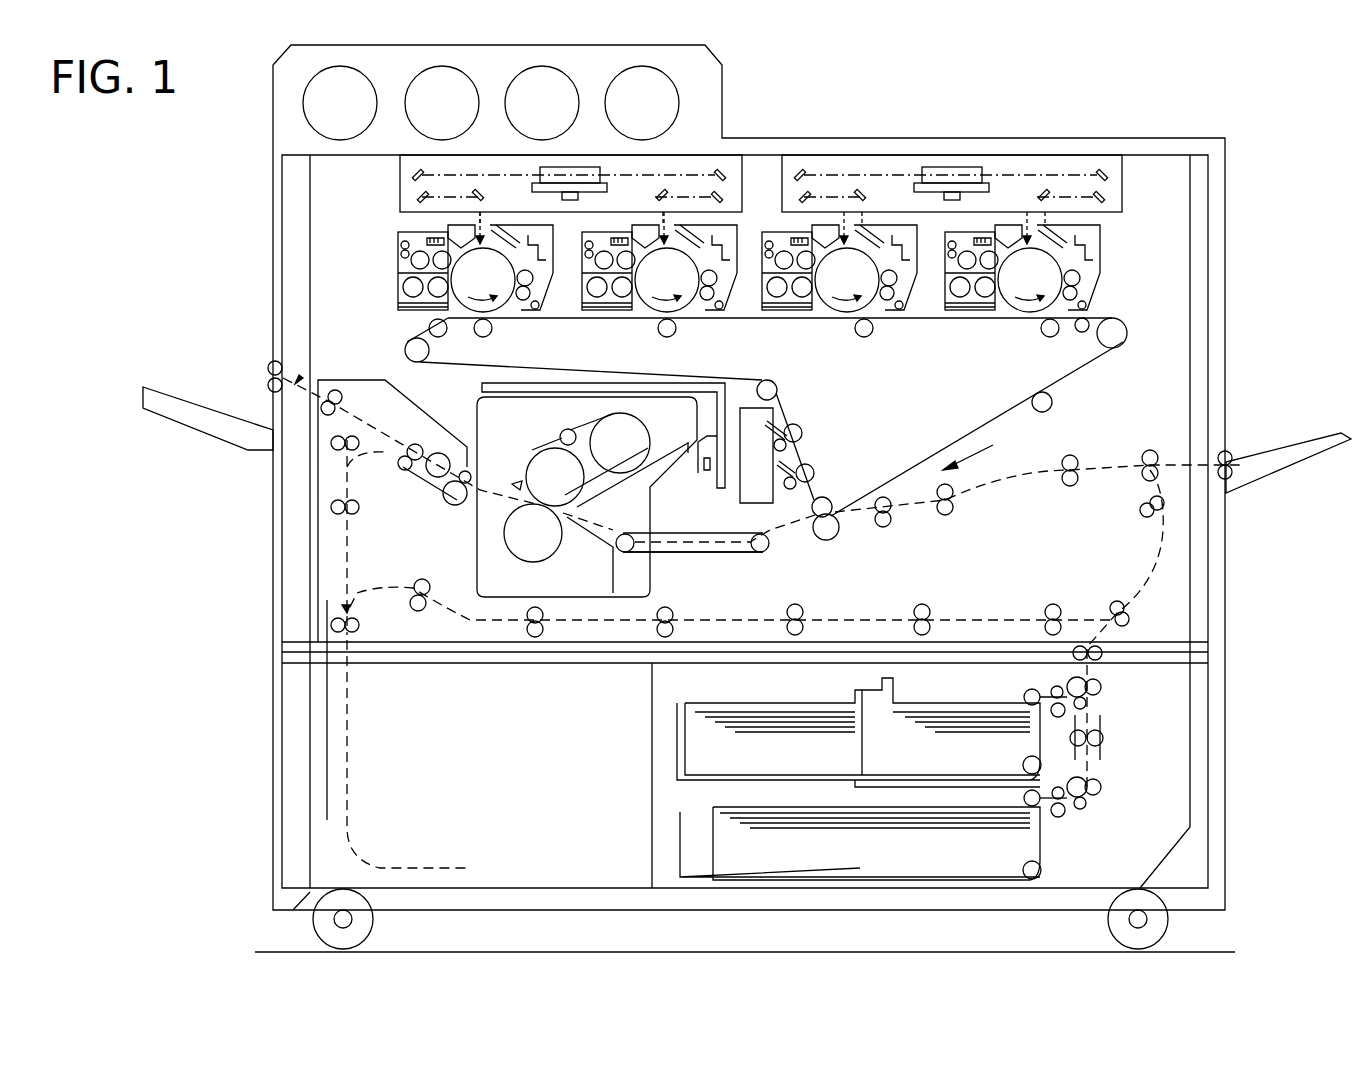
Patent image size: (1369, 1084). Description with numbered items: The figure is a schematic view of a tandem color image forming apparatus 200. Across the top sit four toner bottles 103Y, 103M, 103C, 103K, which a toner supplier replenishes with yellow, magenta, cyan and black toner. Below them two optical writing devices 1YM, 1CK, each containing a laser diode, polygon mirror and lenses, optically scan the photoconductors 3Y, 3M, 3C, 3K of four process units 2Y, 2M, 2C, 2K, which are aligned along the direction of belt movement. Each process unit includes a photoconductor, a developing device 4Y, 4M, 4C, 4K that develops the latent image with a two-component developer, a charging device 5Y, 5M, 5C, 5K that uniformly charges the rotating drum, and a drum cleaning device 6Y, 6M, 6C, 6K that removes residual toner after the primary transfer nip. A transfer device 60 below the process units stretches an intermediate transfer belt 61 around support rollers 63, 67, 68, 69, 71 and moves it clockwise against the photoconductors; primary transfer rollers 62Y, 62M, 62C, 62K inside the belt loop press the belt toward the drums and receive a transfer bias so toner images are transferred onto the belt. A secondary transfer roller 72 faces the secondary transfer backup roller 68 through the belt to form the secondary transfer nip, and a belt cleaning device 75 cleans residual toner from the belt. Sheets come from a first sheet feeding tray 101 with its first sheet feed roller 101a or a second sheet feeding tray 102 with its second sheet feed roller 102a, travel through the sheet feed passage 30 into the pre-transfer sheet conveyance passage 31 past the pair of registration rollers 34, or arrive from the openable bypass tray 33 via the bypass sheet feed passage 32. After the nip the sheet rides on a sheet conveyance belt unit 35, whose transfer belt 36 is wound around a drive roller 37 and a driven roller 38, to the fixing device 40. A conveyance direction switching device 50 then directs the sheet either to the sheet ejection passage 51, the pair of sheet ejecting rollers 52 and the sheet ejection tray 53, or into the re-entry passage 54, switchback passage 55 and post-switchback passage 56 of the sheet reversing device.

The image forming apparatus 200 is at (1102, 108).
The toner bottle 103Y is at (318, 116).
The toner bottle 103M is at (418, 116).
The toner bottle 103C is at (519, 116).
The toner bottle 103K is at (619, 116).
The optical writing device 1YM is at (398, 178).
The optical writing device 1CK is at (1124, 185).
The process unit 2Y is at (457, 283).
The process unit 2M is at (657, 247).
The process unit 2C is at (856, 244).
The process unit 2K is at (1044, 235).
The photoconductor 3Y is at (469, 292).
The photoconductor 3M is at (652, 292).
The photoconductor 3C is at (833, 292).
The photoconductor 3K is at (1016, 292).
The developing device 4Y is at (398, 290).
The developing device 4M is at (582, 292).
The developing device 4C is at (765, 300).
The developing device 4K is at (948, 300).
The charging device 5Y is at (452, 228).
The charging device 5M is at (645, 225).
The charging device 5C is at (826, 225).
The charging device 5K is at (1008, 225).
The drum cleaning device 6Y is at (530, 308).
The drum cleaning device 6M is at (737, 262).
The drum cleaning device 6C is at (910, 305).
The drum cleaning device 6K is at (1101, 255).
The primary transfer roller 62Y is at (492, 336).
The primary transfer roller 62M is at (660, 336).
The primary transfer roller 62C is at (864, 338).
The primary transfer roller 62K is at (1048, 338).
The transfer device 60 is at (1118, 370).
The intermediate transfer belt 61 is at (761, 417).
The support roller 63 is at (406, 355).
The support roller 67 is at (1124, 346).
The secondary transfer backup roller 68 is at (828, 498).
The support roller 69 is at (812, 466).
The support roller 71 is at (778, 393).
The secondary transfer roller 72 is at (828, 541).
The belt cleaning device 75 is at (735, 490).
The fixing device 40 is at (477, 553).
The drive roller 37 is at (618, 552).
The transfer belt 36 is at (672, 556).
The sheet conveyance belt unit 35 is at (715, 560).
The driven roller 38 is at (765, 553).
The pair of registration rollers 34 is at (887, 535).
The pre-transfer sheet conveyance passage 31 is at (993, 493).
The bypass sheet feed passage 32 is at (1170, 463).
The bypass tray 33 is at (1285, 470).
The sheet feed passage 30 is at (1158, 565).
The post-switchback passage 56 is at (572, 624).
The re-entry passage 54 is at (348, 557).
The switchback passage 55 is at (348, 757).
The conveyance direction switching device 50 is at (412, 425).
The sheet ejection passage 51 is at (328, 365).
The pair of sheet ejecting rollers 52 is at (257, 348).
The sheet ejection tray 53 is at (185, 398).
The first sheet feeding tray 101 is at (809, 732).
The first sheet feed roller 101a is at (1025, 694).
The second sheet feeding tray 102 is at (807, 843).
The second sheet feed roller 102a is at (1020, 806).